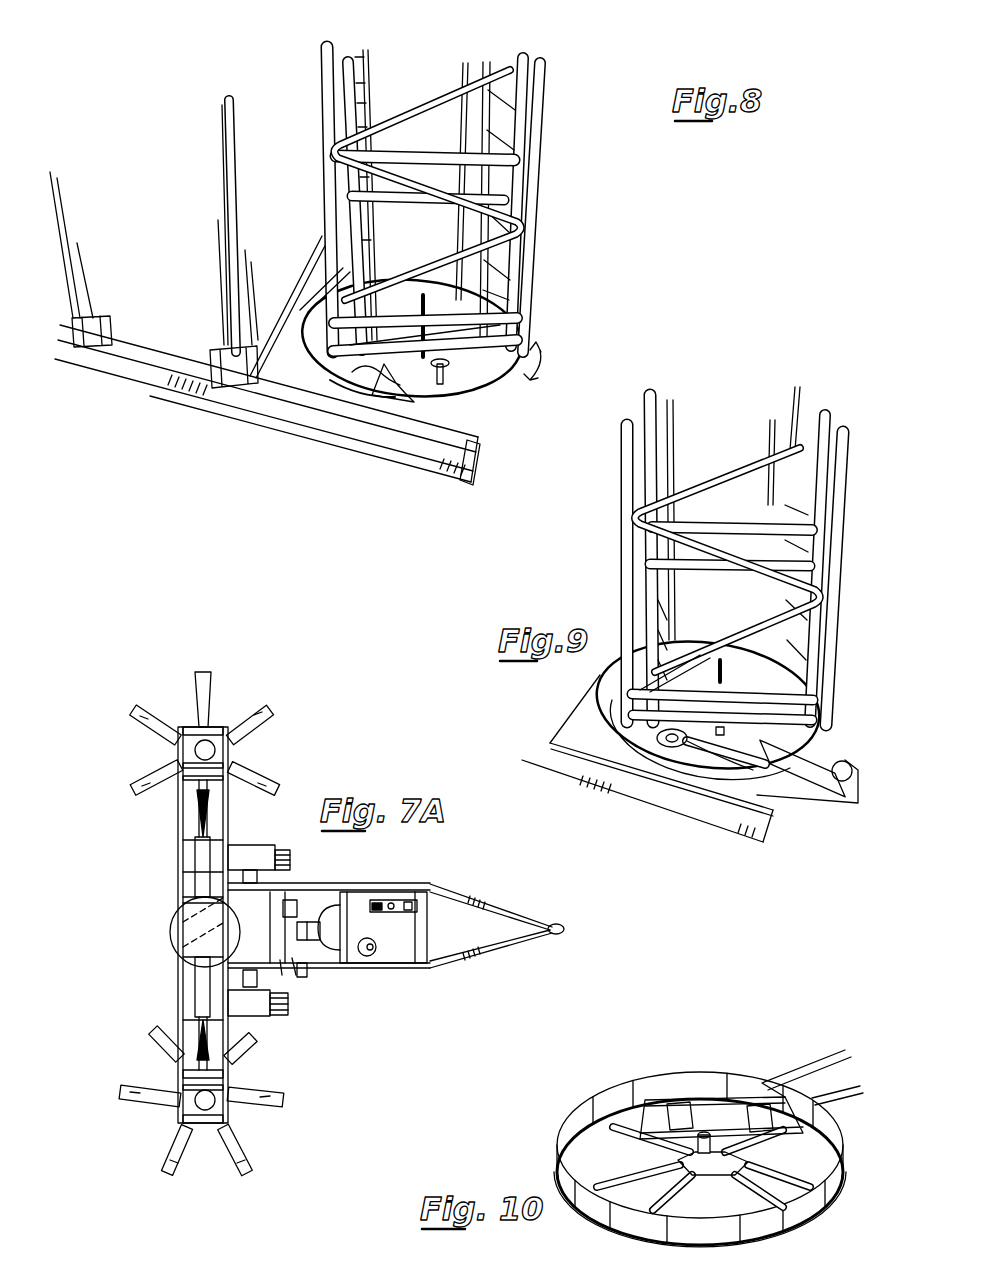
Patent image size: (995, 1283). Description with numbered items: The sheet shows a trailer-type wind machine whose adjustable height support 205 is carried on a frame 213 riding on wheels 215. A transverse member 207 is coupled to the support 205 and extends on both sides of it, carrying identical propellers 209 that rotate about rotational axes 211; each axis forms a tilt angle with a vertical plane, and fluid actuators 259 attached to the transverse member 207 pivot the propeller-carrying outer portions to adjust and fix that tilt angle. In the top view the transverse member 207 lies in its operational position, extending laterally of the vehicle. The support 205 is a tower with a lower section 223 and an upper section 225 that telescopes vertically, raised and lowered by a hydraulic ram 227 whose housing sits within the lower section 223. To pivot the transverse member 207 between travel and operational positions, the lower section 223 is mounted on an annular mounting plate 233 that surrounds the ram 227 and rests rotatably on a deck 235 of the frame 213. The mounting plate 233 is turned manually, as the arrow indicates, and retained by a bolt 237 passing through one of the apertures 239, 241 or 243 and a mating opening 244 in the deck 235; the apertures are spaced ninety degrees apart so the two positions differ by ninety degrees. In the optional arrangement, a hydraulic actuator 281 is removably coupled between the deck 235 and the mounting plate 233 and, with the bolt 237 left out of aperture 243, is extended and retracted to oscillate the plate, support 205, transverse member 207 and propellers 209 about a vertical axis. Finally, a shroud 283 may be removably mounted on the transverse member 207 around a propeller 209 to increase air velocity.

In FIG. 9, the adjustable height support 205 is at (610, 487).
In FIG. 7A, the transverse member 207 is at (176, 849).
In FIG. 10, the transverse member 207 is at (787, 1064).
In FIG. 7A, the propellers 209 is at (274, 718).
In FIG. 10, the propellers 209 is at (617, 1233).
In FIG. 7A, the rotational axes 211 is at (207, 749).
In FIG. 8, the frame 213 is at (285, 413).
In FIG. 7A, the frame 213 is at (440, 972).
In FIG. 7A, the wheels 215 is at (290, 862).
In FIG. 8, the lower section 223 is at (541, 160).
In FIG. 9, the lower section 223 is at (627, 547).
In FIG. 8, the upper section 225 is at (541, 114).
In FIG. 9, the upper section 225 is at (667, 453).
In FIG. 8, the hydraulic ram 227 is at (470, 64).
In FIG. 9, the hydraulic ram 227 is at (788, 420).
In FIG. 8, the mounting plate 233 is at (482, 371).
In FIG. 9, the mounting plate 233 is at (797, 733).
In FIG. 8, the deck 235 is at (458, 440).
In FIG. 9, the deck 235 is at (790, 815).
In FIG. 8, the bolt 237 is at (447, 400).
In FIG. 8, the aperture 239 is at (517, 326).
In FIG. 8, the aperture 241 is at (373, 380).
In FIG. 9, the aperture 241 is at (812, 698).
In FIG. 8, the aperture 243 is at (303, 268).
In FIG. 9, the aperture 243 is at (676, 748).
In FIG. 8, the mating opening 244 is at (393, 395).
In FIG. 7A, the fluid actuators 259 is at (200, 870).
In FIG. 9, the hydraulic actuator 281 is at (773, 790).
In FIG. 10, the shroud 283 is at (647, 1097).